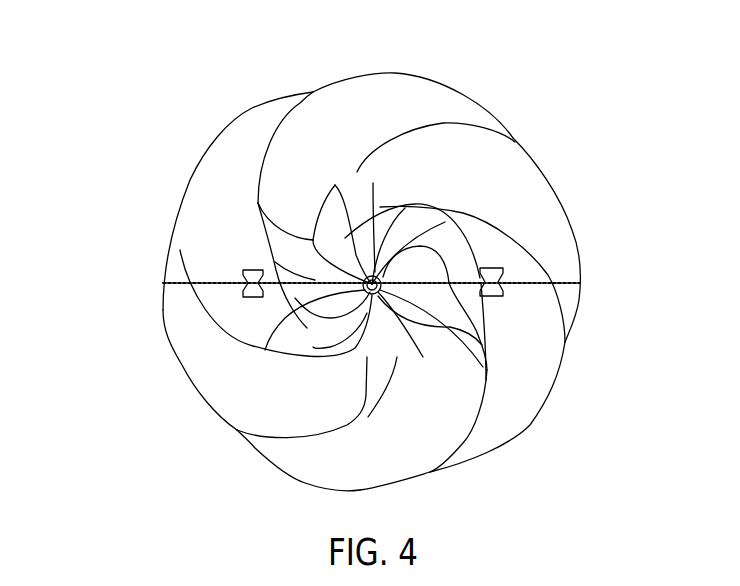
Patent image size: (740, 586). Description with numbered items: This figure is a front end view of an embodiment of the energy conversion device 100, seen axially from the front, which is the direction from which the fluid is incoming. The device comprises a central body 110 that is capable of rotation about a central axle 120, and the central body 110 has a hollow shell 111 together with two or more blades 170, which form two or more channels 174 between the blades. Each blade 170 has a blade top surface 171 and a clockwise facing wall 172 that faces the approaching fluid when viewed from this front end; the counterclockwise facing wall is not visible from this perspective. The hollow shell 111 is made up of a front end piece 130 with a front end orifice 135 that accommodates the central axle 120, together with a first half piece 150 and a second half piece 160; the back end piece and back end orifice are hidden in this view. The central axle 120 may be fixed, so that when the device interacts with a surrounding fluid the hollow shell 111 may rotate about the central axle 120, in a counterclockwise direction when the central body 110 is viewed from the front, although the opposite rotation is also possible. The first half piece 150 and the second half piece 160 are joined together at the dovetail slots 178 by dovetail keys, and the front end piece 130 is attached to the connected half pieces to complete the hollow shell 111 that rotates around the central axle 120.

The energy conversion device 100 is at (342, 154).
The central body 110 is at (302, 83).
The hollow shell 111 is at (333, 187).
The central axle 120 is at (365, 283).
The front end piece 130 is at (307, 327).
The front end orifice 135 is at (374, 290).
The first half piece 150 is at (193, 163).
The second half piece 160 is at (572, 333).
The blade 170 is at (515, 138).
The blade top surface 171 is at (340, 240).
The clockwise facing wall 172 is at (537, 222).
The channel 174 is at (405, 208).
The dovetail slot 178 is at (242, 292).